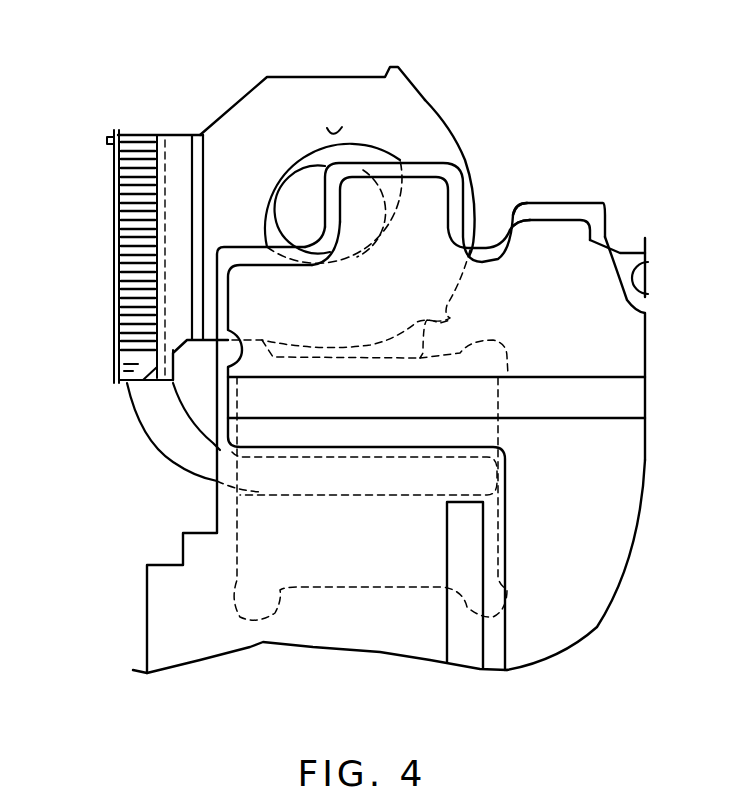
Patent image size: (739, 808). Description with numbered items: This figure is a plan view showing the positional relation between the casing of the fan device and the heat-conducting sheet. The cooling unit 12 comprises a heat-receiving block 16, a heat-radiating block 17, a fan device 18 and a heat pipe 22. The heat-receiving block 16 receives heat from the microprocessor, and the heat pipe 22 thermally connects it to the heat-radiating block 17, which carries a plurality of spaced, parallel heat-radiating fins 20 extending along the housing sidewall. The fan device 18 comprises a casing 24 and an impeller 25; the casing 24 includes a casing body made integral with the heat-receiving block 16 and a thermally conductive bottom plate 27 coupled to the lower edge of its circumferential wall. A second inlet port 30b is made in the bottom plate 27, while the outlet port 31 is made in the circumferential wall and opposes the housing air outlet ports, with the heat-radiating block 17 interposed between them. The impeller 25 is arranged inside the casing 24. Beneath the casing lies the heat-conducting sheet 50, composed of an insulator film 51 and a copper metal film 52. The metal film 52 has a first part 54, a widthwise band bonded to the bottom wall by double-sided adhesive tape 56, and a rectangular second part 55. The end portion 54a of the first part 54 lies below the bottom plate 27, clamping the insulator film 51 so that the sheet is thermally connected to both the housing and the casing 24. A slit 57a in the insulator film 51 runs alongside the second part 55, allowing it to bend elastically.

The cooling unit 12 is at (97, 374).
The heat-receiving block 16 is at (360, 568).
The heat-radiating block 17 is at (178, 150).
The fan device 18 is at (413, 107).
The heat-radiating fins 20 is at (133, 247).
The heat pipe 22 is at (177, 438).
The casing 24 is at (315, 73).
The impeller 25 is at (297, 195).
The bottom plate 27 is at (440, 148).
The second inlet port 30b is at (343, 127).
The outlet port 31 is at (183, 300).
The heat-conducting sheet 50 is at (570, 140).
The insulator film 51 is at (632, 257).
The metal film 52 is at (568, 233).
The first part 54 is at (633, 348).
The end portion 54a is at (303, 405).
The second part 55 is at (617, 552).
The double-sided adhesive tape 56 is at (633, 400).
The slit 57a is at (475, 640).